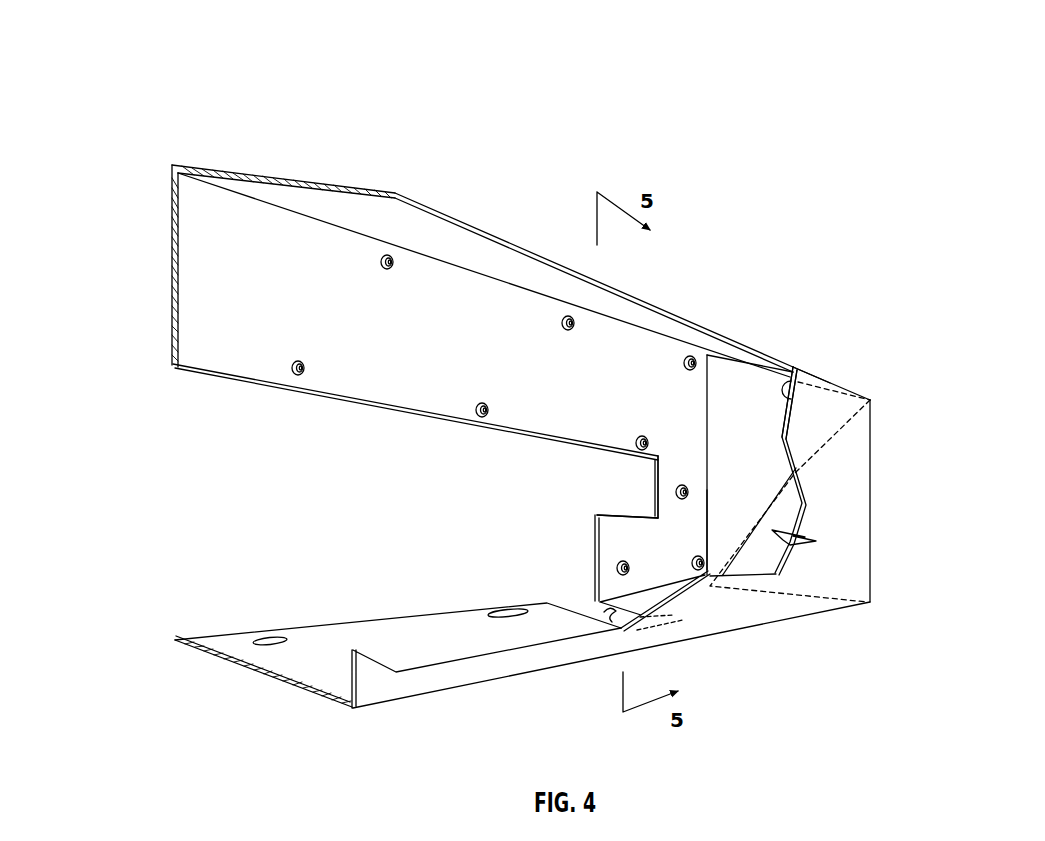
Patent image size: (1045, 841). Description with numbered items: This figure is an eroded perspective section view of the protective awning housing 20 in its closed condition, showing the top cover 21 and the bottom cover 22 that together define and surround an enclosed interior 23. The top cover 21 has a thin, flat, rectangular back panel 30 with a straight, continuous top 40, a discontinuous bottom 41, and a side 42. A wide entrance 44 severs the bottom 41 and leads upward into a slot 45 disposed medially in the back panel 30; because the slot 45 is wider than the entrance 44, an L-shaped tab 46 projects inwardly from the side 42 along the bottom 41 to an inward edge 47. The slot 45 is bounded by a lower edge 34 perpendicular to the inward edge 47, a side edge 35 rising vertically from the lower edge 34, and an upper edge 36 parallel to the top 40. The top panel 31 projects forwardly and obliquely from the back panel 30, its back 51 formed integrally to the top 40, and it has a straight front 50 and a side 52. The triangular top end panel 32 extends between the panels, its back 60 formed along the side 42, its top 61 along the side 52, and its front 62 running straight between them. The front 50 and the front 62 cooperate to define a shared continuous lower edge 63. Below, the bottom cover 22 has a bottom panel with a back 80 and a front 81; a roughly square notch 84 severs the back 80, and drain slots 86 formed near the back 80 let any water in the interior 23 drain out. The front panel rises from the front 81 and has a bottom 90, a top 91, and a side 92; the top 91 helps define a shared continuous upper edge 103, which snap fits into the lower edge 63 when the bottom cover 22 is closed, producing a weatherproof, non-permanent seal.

The protective awning housing 20 is at (153, 80).
The top cover 21 is at (146, 296).
The bottom cover 22 is at (146, 590).
The enclosed interior 23 is at (760, 447).
The back panel 30 is at (343, 380).
The top panel 31 is at (373, 185).
The top end panel 32 is at (748, 427).
The lower edge 34 is at (640, 516).
The side edge 35 is at (655, 476).
The upper edge 36 is at (573, 453).
The top 40 is at (172, 190).
The bottom 41 is at (595, 596).
The side 42 is at (700, 537).
The entrance 44 is at (597, 546).
The slot 45 is at (510, 453).
The L-shaped tab 46 is at (683, 520).
The inward edge 47 is at (595, 516).
The front 50 is at (640, 300).
The back 51 is at (603, 320).
The side 52 is at (795, 403).
The back 60 is at (707, 398).
The top 61 is at (717, 360).
The front 62 is at (787, 493).
The lower edge 63 is at (482, 228).
The back 80 is at (218, 636).
The front 81 is at (327, 700).
The notch 84 is at (618, 612).
The drain slots 86 is at (270, 638).
The bottom 90 is at (385, 690).
The top 91 is at (872, 405).
The side 92 is at (870, 590).
The upper edge 103 is at (806, 368).